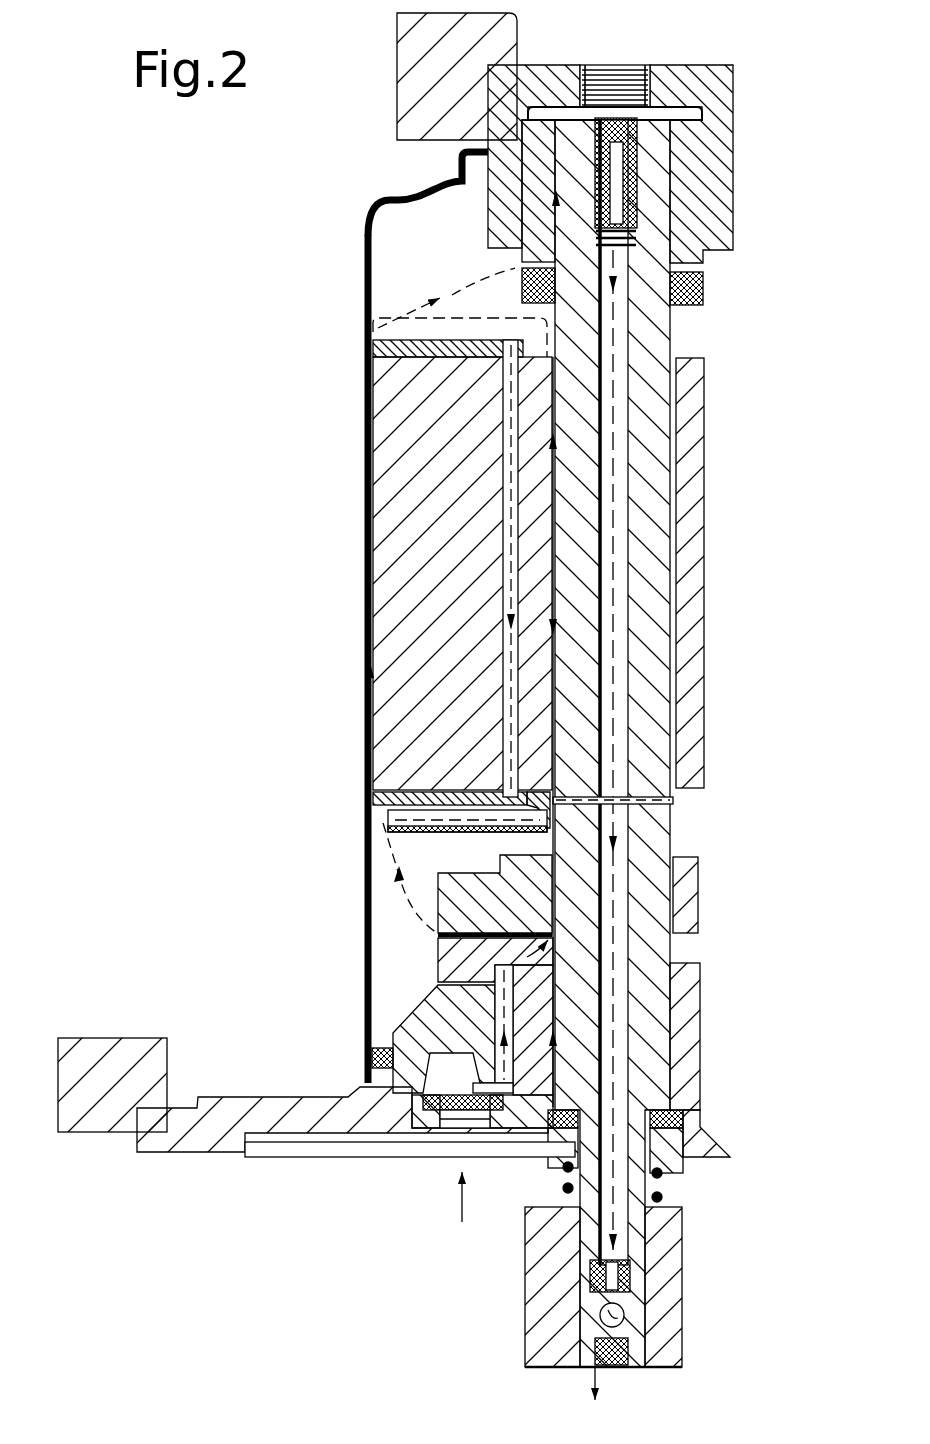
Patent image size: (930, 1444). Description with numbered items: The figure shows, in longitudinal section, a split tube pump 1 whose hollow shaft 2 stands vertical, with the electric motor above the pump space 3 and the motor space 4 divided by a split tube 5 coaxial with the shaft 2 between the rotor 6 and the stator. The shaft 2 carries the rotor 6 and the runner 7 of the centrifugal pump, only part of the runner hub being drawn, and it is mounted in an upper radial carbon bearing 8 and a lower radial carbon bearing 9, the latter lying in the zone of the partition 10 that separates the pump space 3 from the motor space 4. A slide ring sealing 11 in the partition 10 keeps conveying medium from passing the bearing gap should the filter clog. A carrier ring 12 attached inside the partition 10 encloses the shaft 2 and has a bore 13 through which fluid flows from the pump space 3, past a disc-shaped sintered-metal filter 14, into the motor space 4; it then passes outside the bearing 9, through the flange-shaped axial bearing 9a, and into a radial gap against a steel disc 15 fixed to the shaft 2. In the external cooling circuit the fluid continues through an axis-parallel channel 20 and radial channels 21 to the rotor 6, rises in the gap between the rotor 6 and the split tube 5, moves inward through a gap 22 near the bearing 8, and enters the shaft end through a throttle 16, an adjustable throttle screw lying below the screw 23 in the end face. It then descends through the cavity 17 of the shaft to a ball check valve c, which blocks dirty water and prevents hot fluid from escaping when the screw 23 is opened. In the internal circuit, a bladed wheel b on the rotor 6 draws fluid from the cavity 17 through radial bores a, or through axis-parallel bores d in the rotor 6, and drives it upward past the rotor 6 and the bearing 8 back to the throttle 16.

The split tube pump 1 is at (338, 208).
The shaft 2 is at (657, 840).
The pump space 3 is at (309, 1306).
The motor space 4 is at (425, 222).
The split tube 5 is at (364, 908).
The rotor 6 is at (393, 500).
The runner 7 is at (543, 1293).
The upper radial carbon bearing 8 is at (690, 186).
The lower radial carbon bearing 9 is at (681, 1050).
The upper axial bearing 9a is at (452, 965).
The partition 10 is at (187, 1133).
The slide ring sealing 11 is at (684, 1163).
The carrier ring 12 is at (423, 1120).
The bore 13 is at (447, 1112).
The filter 14 is at (482, 1112).
The steel disc 15 is at (456, 884).
The throttle 16 is at (637, 123).
The cavity 17 is at (622, 508).
The axis-parallel channel 20 is at (500, 1043).
The radial channels 21 is at (437, 936).
The gap 22 is at (446, 298).
The screw 23 is at (593, 67).
The radial bores a is at (662, 797).
The bladed wheel b is at (386, 815).
The ball check valve c is at (626, 1315).
The bores d is at (508, 598).